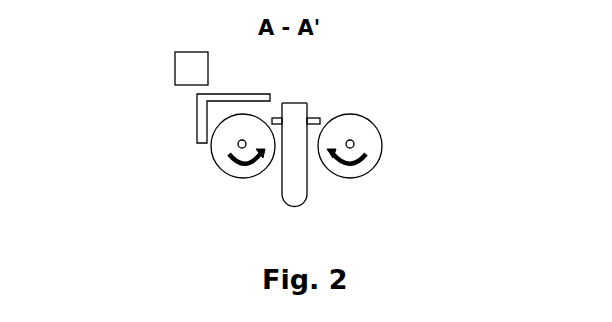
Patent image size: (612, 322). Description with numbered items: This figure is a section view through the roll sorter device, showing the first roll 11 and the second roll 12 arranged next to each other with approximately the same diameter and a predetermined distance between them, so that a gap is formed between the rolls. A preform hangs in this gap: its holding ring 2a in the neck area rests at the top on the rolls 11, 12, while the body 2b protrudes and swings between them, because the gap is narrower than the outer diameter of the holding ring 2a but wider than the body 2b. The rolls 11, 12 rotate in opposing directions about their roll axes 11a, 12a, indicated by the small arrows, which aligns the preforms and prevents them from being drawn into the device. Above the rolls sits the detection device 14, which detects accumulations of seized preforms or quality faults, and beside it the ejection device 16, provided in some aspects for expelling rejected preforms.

The detection device 14 is at (176, 70).
The ejection device 16 is at (197, 112).
The holding ring 2a is at (324, 118).
The body 2b is at (291, 181).
The second roll 12 is at (216, 166).
The roll axis 12a is at (238, 146).
The first roll 11 is at (380, 148).
The roll axis 11a is at (355, 143).